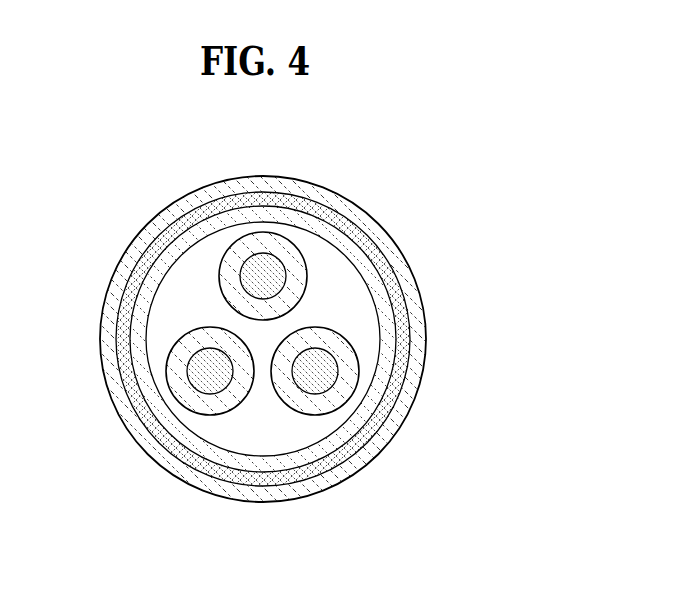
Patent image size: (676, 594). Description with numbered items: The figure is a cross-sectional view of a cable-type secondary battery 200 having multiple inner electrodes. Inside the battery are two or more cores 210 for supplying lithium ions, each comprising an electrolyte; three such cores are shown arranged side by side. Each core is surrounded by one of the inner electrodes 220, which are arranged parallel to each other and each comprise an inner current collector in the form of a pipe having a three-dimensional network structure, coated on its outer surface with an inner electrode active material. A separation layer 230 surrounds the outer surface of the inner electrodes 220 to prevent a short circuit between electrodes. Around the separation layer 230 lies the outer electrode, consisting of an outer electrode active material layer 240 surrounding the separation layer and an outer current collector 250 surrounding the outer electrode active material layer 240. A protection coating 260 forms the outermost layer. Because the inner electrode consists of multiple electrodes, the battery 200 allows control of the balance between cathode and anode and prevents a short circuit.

The cable-type secondary battery 200 is at (389, 181).
The core 210 is at (263, 262).
The inner electrode 220 is at (278, 242).
The separation layer 230 is at (353, 275).
The outer electrode active material layer 240 is at (380, 288).
The outer current collector 250 is at (402, 308).
The protection coating 260 is at (417, 332).